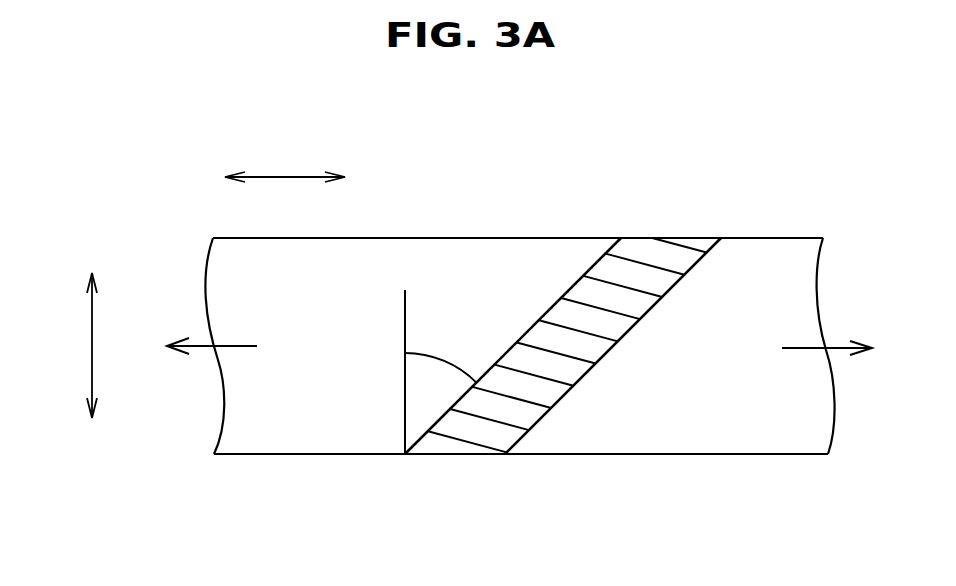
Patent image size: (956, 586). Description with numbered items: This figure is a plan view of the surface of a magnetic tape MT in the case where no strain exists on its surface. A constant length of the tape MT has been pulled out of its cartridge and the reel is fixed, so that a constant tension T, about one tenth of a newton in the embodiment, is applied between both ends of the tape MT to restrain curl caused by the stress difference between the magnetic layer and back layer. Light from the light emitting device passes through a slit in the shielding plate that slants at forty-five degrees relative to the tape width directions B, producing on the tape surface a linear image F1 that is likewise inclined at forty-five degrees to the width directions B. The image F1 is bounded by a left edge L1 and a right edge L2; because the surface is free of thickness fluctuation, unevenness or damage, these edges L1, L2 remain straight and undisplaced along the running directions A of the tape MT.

The tape MT is at (770, 190).
The left edge L1 is at (550, 312).
The right edge L2 is at (623, 335).
The image F1 is at (547, 393).
The running directions A is at (285, 157).
The tape width directions B is at (76, 345).
The tension T is at (520, 348).